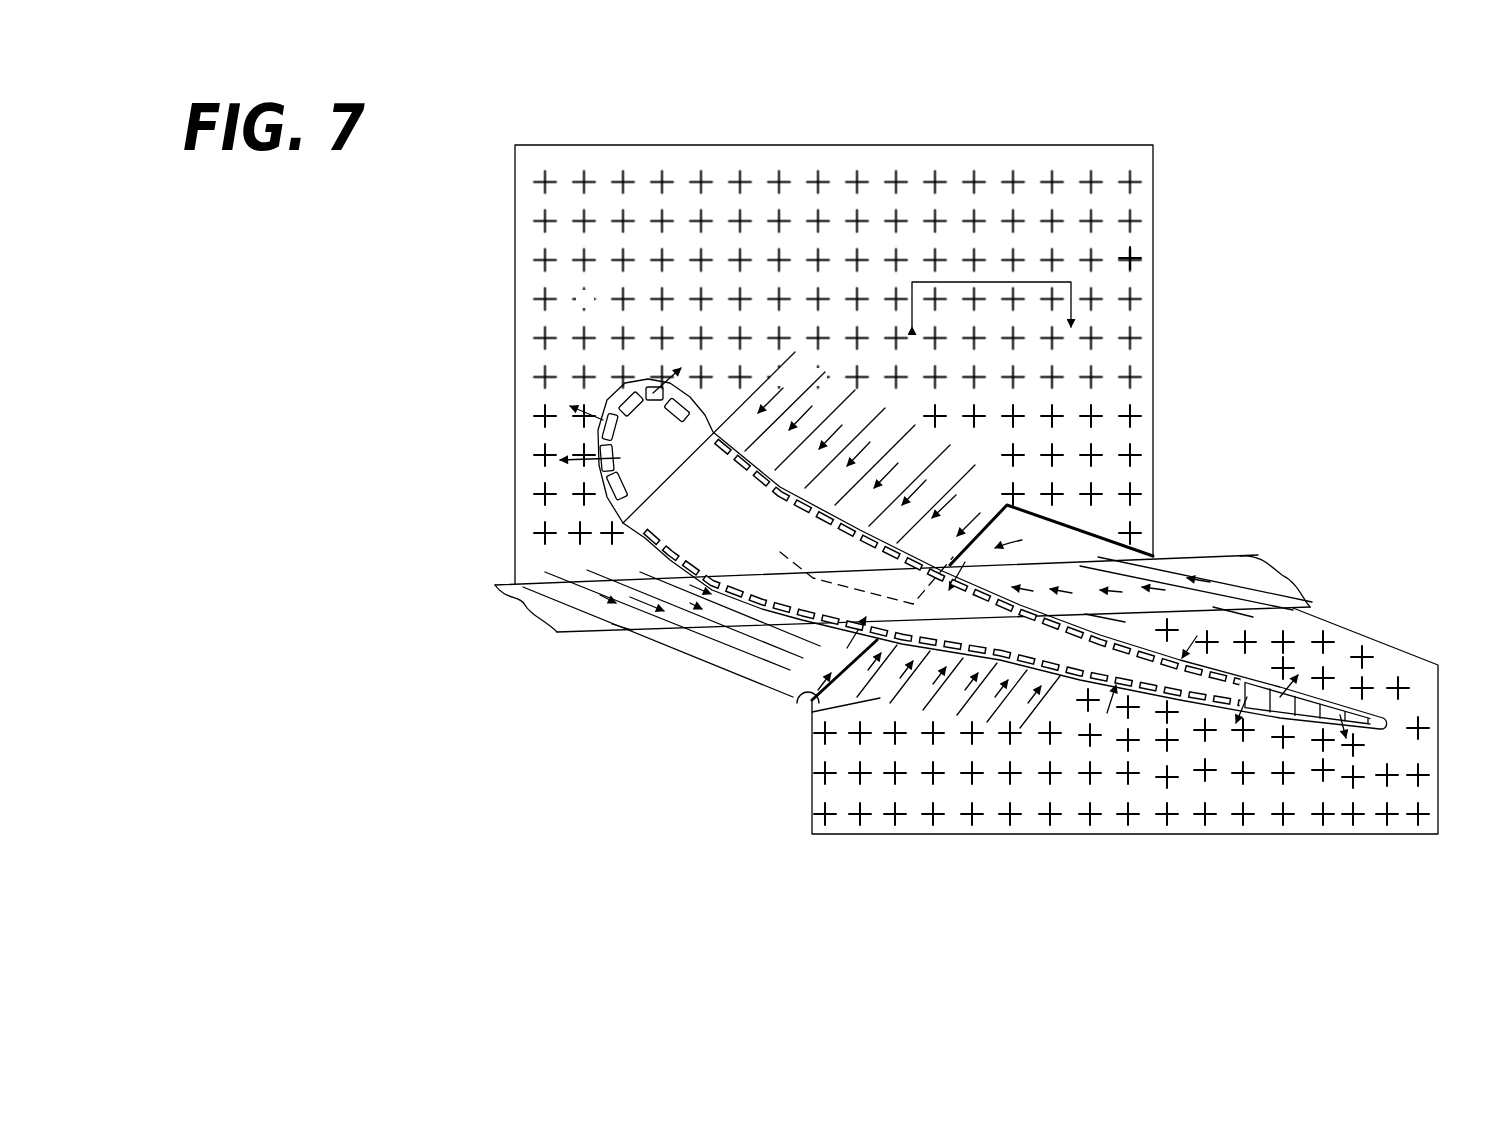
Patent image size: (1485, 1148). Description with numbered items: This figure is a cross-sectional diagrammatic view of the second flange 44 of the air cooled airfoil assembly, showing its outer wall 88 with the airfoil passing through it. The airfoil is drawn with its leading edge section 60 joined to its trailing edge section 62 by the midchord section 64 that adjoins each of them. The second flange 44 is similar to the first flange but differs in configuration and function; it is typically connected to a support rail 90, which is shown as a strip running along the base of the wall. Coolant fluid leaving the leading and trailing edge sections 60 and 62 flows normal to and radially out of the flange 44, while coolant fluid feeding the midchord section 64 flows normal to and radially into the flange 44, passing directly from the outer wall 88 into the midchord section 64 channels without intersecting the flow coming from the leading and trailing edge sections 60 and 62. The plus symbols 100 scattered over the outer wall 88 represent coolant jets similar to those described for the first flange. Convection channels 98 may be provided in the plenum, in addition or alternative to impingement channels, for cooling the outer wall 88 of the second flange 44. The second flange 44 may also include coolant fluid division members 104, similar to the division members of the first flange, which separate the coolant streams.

The second flange 44 is at (1160, 352).
The leading edge section 60 is at (590, 506).
The trailing edge section 62 is at (1305, 762).
The midchord section 64 is at (680, 674).
The outer wall 88 is at (836, 248).
The support rail 90 is at (1245, 555).
The convection channels 98 is at (618, 629).
The "+" symbols 100 is at (1130, 256).
The coolant fluid division members 104 is at (1007, 505).